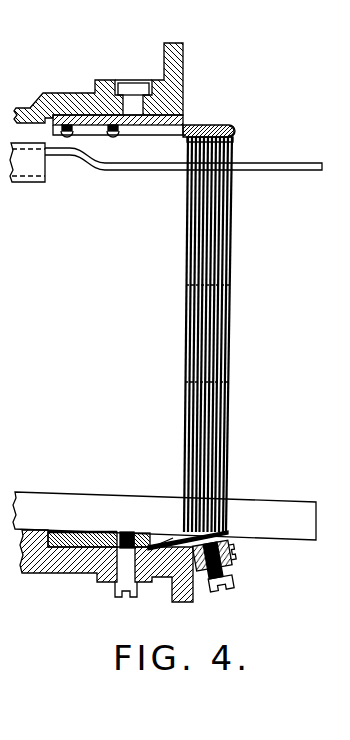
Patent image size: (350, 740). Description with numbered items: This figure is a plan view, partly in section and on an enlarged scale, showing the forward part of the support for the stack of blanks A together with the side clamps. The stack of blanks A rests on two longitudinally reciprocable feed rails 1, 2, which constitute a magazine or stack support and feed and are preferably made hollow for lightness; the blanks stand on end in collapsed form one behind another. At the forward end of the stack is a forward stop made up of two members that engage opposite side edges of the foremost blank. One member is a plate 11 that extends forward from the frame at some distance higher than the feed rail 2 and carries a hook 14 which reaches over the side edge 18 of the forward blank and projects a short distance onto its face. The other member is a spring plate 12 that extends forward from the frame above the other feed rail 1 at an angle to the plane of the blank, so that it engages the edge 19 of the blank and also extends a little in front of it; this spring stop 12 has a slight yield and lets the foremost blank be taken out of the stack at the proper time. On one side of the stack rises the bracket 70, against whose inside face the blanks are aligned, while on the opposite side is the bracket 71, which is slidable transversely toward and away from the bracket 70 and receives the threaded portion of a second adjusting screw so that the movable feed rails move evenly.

The bracket 70 is at (68, 106).
The plate 11 is at (192, 127).
The side edge 18 is at (238, 132).
The hook 14 is at (238, 140).
The stack of blanks A is at (200, 312).
The feed rail 2 is at (33, 182).
The feed rail 1 is at (45, 507).
The bracket 71 is at (72, 574).
The spring plate 12 is at (172, 543).
The edge 19 is at (227, 532).